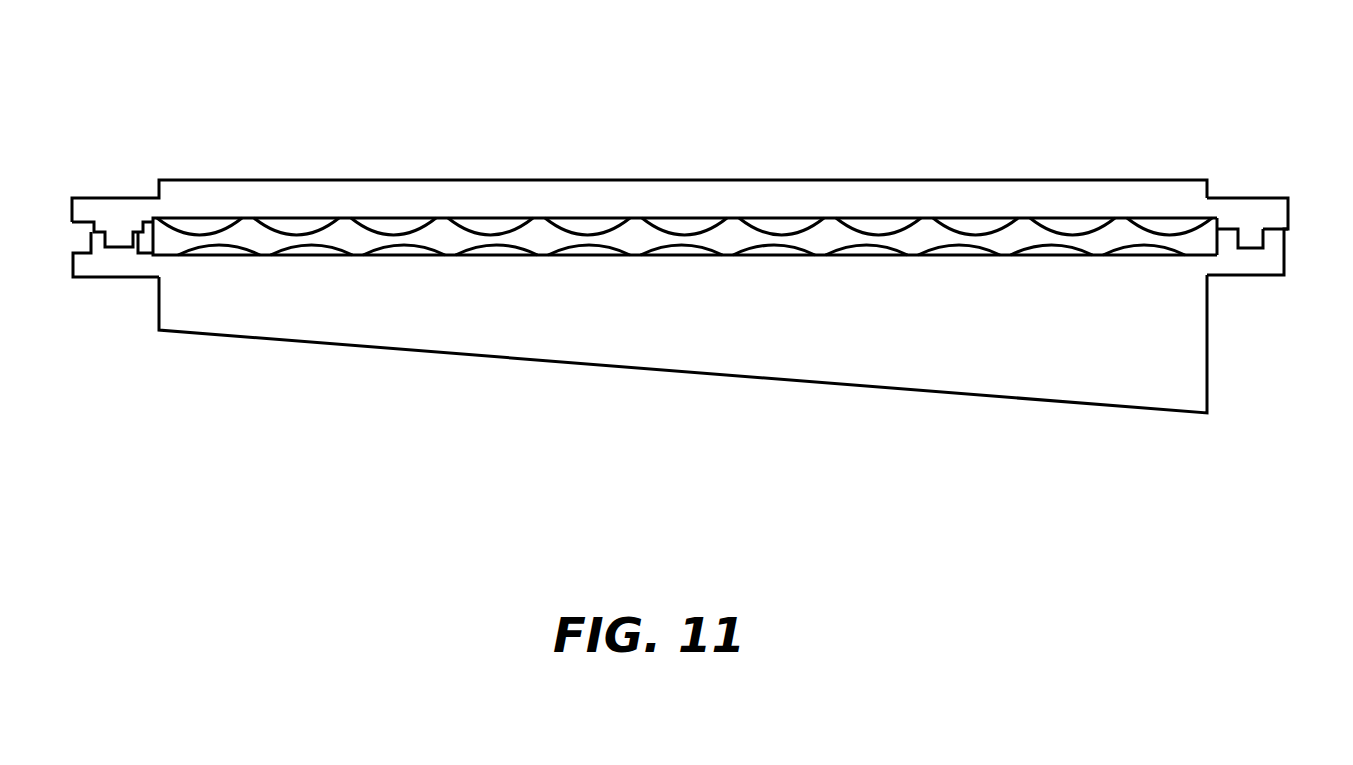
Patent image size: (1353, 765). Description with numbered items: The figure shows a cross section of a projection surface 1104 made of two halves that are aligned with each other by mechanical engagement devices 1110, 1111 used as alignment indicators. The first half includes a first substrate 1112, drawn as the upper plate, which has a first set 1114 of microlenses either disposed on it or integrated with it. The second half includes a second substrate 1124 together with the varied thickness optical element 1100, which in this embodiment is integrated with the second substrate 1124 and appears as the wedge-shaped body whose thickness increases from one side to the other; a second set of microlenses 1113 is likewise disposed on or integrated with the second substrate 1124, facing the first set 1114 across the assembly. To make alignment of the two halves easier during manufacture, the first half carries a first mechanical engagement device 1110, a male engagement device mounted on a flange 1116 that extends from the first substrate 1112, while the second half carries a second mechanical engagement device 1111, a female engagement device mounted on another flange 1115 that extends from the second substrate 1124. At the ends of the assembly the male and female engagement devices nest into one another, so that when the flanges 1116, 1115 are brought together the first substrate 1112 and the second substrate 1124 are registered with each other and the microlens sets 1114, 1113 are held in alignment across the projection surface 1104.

The varied thickness optical element 1100 is at (880, 352).
The projection surface 1104 is at (385, 128).
The first mechanical engagement device 1110 is at (1245, 230).
The second mechanical engagement device 1111 is at (1228, 248).
The first substrate 1112 is at (608, 197).
The lower lens surface 1113 is at (679, 265).
The first set of microlenses 1114 is at (784, 212).
The flange 1115 is at (1278, 265).
The flange 1116 is at (1227, 208).
The second substrate 1124 is at (376, 268).